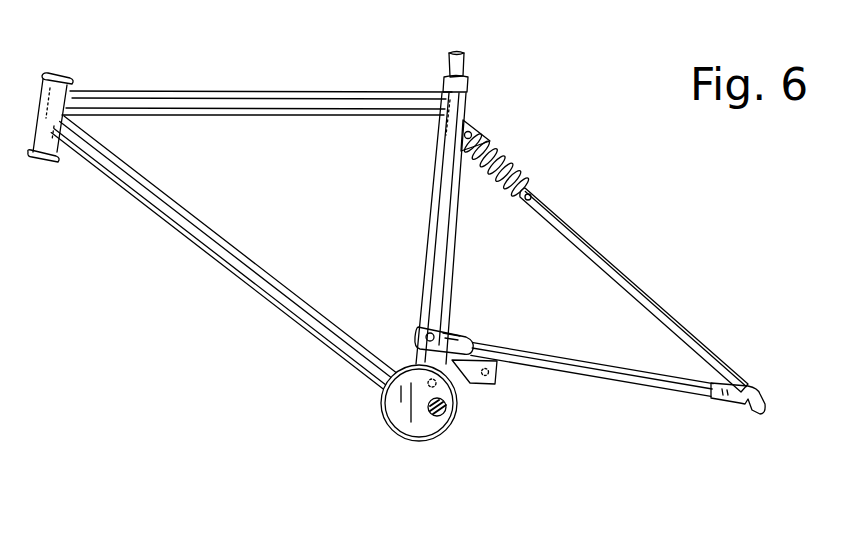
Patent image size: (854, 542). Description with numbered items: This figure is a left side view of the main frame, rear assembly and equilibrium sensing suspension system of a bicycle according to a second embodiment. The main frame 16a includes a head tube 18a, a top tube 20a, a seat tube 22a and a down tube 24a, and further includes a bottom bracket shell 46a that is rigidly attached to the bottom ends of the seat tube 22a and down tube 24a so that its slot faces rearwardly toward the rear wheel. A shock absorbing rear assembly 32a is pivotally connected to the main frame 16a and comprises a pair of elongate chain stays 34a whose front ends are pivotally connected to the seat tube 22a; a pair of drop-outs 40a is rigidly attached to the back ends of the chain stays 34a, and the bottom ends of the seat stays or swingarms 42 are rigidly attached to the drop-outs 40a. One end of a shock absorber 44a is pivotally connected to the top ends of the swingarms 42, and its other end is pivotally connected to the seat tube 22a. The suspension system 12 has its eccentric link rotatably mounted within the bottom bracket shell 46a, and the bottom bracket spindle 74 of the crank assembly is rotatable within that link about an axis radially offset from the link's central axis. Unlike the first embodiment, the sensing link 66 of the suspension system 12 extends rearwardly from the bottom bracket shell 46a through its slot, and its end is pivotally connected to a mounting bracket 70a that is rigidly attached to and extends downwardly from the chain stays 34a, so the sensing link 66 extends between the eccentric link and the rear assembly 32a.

The suspension system 12 is at (378, 426).
The main frame 16a is at (352, 92).
The head tube 18a is at (34, 112).
The top tube 20a is at (185, 96).
The seat tube 22a is at (462, 99).
The down tube 24a is at (213, 263).
The shock absorbing rear assembly 32a is at (677, 295).
The chain stays 34a is at (627, 378).
The drop-outs 40a is at (747, 392).
The seat stay 42 is at (592, 244).
The shock absorber 44a is at (522, 155).
The bottom bracket shell 46a is at (419, 446).
The sensing link 66 is at (463, 380).
The mounting bracket 70a is at (497, 354).
The bottom bracket spindle 74 is at (445, 414).